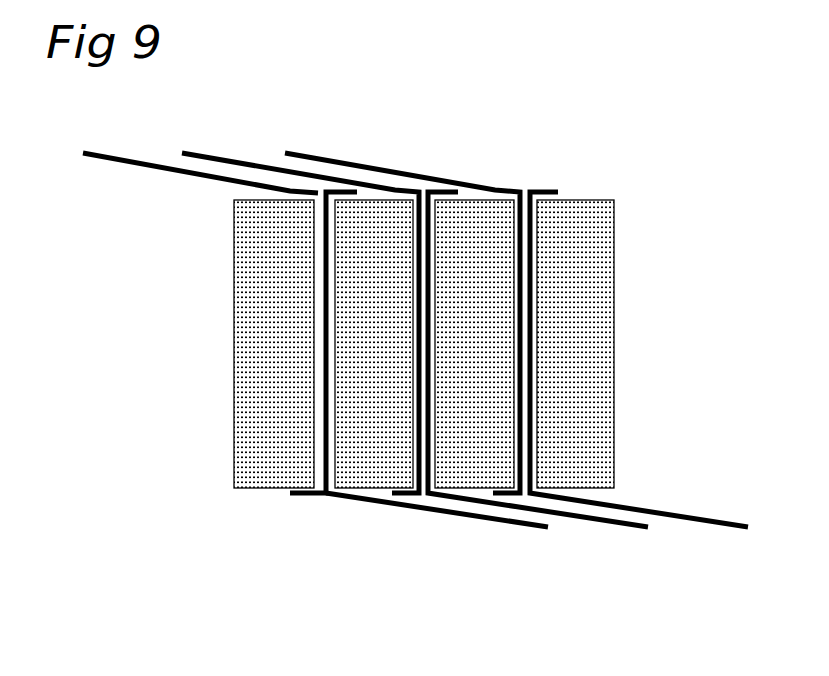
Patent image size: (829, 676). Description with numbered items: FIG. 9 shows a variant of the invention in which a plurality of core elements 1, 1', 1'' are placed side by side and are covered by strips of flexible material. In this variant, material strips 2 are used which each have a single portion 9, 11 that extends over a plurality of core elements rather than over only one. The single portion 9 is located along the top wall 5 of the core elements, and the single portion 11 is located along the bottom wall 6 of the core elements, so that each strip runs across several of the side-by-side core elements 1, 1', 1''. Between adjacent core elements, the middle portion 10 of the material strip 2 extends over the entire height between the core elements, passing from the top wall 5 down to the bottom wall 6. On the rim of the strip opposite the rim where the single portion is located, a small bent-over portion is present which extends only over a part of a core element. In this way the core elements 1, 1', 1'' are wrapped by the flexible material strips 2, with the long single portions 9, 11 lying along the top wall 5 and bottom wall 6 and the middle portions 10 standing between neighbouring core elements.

The core element 1 is at (274, 380).
The core element 1' is at (374, 380).
The core element 1'' is at (474, 381).
The material strip 2 is at (273, 165).
The top wall 5 is at (385, 162).
The bottom wall 6 is at (500, 561).
The single portion 9 is at (141, 160).
The middle portion 10 is at (323, 250).
The single portion 11 is at (508, 529).